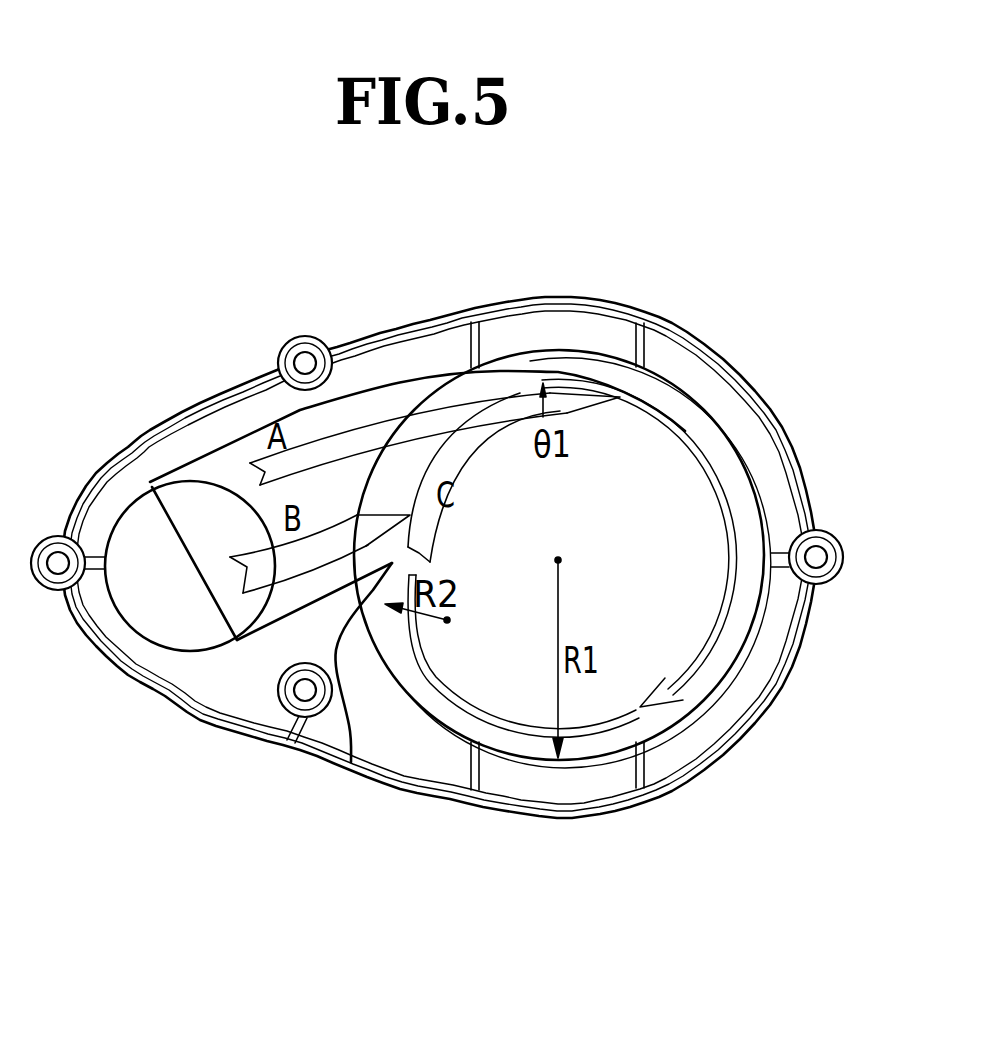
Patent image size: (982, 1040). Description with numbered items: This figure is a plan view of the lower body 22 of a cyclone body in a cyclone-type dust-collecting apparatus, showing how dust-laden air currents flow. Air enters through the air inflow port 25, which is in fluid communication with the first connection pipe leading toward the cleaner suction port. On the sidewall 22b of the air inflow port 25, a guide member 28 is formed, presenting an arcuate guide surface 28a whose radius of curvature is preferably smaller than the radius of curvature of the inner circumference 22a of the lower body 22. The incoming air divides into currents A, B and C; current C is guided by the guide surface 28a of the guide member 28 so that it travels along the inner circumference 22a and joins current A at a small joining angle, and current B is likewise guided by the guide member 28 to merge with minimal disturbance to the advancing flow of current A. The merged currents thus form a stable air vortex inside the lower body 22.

The lower body 22 is at (712, 325).
The inner circumference 22a is at (622, 360).
The sidewall 22b is at (340, 598).
The air inflow port 25 is at (184, 538).
The guide member 28 is at (351, 762).
The arcuate guide surface 28a is at (365, 603).